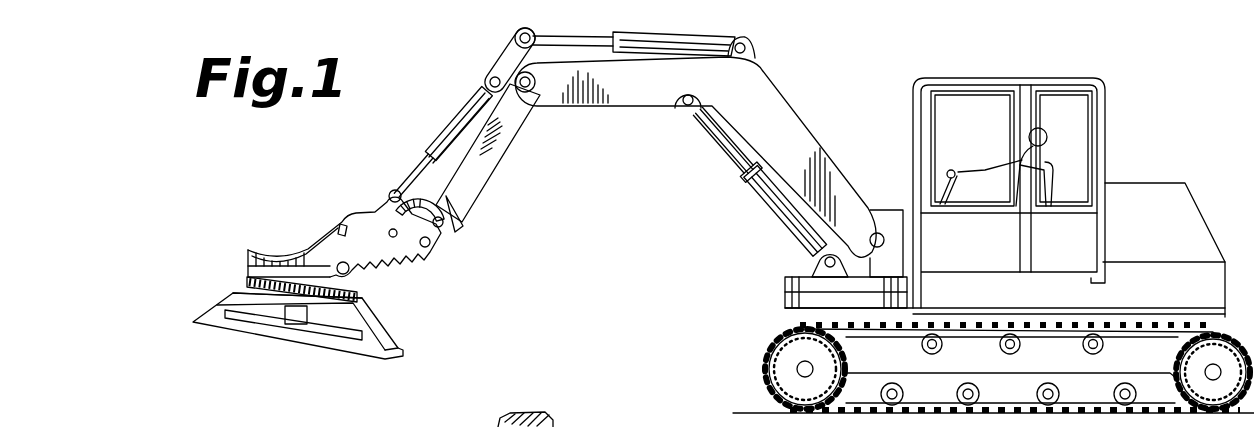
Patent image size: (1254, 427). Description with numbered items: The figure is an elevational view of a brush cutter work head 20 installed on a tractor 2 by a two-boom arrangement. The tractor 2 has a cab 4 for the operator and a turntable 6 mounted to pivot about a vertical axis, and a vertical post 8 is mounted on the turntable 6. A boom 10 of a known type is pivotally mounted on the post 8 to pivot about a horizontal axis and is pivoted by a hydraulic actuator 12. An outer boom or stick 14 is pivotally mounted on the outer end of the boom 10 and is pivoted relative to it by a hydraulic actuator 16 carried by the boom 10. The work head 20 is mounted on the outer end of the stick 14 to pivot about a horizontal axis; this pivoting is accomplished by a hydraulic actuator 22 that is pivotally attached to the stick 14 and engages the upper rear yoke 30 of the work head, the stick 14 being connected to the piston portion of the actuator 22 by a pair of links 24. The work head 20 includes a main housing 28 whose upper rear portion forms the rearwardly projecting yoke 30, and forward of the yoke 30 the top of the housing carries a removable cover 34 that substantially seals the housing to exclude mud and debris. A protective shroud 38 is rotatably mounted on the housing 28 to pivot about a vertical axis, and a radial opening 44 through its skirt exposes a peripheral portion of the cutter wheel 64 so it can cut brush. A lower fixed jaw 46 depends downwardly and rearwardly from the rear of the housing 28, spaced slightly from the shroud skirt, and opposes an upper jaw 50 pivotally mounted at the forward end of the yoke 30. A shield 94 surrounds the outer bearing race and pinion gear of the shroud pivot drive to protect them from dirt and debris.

The tractor 2 is at (1176, 136).
The cab 4 is at (913, 110).
The turntable 6 is at (785, 282).
The vertical post 8 is at (885, 208).
The boom 10 is at (773, 105).
The hydraulic actuator 12 is at (767, 190).
The stick 14 is at (514, 134).
The hydraulic actuator 16 is at (653, 47).
The work head 20 is at (272, 224).
The hydraulic actuator 22 is at (445, 133).
The links 24 is at (452, 183).
The main housing 28 is at (247, 262).
The yoke 30 is at (440, 250).
The removable cover 34 is at (308, 253).
The protective shroud 38 is at (198, 310).
The radial opening 44 is at (216, 320).
The lower fixed jaw 46 is at (395, 345).
The upper jaw 50 is at (410, 268).
The cutter wheel 64 is at (332, 336).
The shield 94 is at (240, 287).